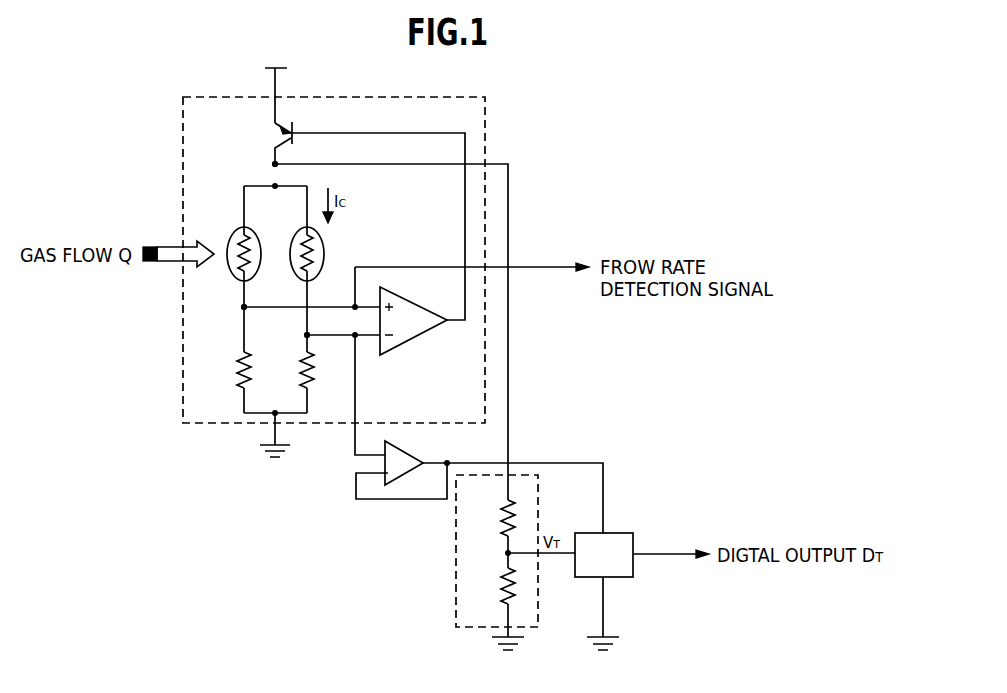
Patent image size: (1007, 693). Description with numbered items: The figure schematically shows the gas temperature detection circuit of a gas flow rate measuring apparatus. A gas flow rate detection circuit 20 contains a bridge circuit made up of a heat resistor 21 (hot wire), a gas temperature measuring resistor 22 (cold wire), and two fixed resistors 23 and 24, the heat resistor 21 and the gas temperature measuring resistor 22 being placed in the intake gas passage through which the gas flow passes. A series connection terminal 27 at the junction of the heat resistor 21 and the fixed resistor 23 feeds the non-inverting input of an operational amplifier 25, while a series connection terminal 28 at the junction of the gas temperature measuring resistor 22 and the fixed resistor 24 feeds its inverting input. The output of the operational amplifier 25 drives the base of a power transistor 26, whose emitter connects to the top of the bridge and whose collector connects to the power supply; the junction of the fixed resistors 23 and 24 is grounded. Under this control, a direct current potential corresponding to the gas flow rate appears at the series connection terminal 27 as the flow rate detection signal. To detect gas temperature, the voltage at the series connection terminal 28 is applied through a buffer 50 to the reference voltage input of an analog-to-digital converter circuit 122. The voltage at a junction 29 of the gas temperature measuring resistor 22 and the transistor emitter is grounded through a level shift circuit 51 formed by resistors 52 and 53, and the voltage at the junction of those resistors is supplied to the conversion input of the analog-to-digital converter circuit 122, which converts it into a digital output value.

The gas flow rate detection circuit 20 is at (220, 97).
The heat resistor 21 is at (231, 232).
The gas temperature measuring resistor 22 is at (301, 226).
The fixed resistor 23 is at (238, 370).
The fixed resistor 24 is at (316, 375).
The operational amplifier 25 is at (419, 289).
The power transistor 26 is at (297, 127).
The series connection terminal 27 is at (243, 307).
The series connection terminal 28 is at (308, 336).
The junction 29 is at (274, 163).
The buffer 50 is at (379, 480).
The level shift circuit 51 is at (456, 628).
The resistor 52 is at (493, 523).
The resistor 53 is at (493, 590).
The A/D converter circuit 122 is at (590, 578).